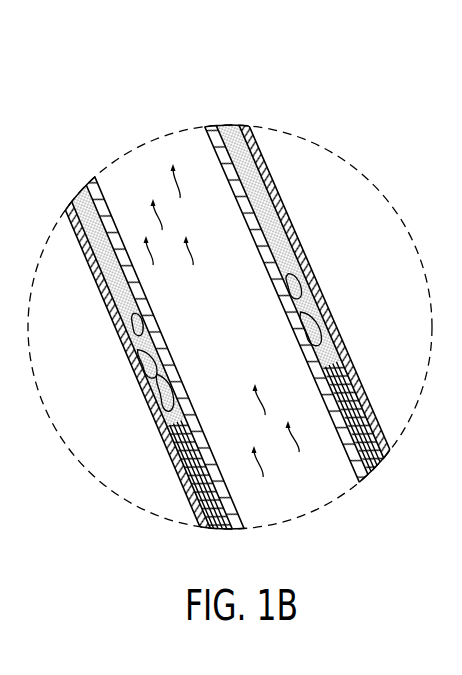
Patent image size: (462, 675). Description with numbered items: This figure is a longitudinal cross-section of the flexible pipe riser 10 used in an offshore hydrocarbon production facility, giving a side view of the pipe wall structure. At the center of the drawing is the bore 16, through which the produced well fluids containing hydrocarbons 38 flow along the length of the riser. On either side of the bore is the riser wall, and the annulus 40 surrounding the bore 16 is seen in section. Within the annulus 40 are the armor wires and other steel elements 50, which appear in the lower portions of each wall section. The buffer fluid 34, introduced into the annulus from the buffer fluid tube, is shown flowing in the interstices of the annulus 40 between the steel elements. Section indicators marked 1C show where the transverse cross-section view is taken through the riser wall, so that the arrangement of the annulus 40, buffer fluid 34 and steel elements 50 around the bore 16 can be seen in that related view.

The flexible pipe riser 10 is at (120, 412).
The bore 16 is at (231, 331).
The buffer fluid 34 is at (330, 340).
The produced well fluids containing hydrocarbons 38 is at (170, 176).
The annulus 40 is at (215, 118).
The armor wires and other steel elements 50 is at (368, 457).
The section indicator for FIG. 1C is at (90, 282).